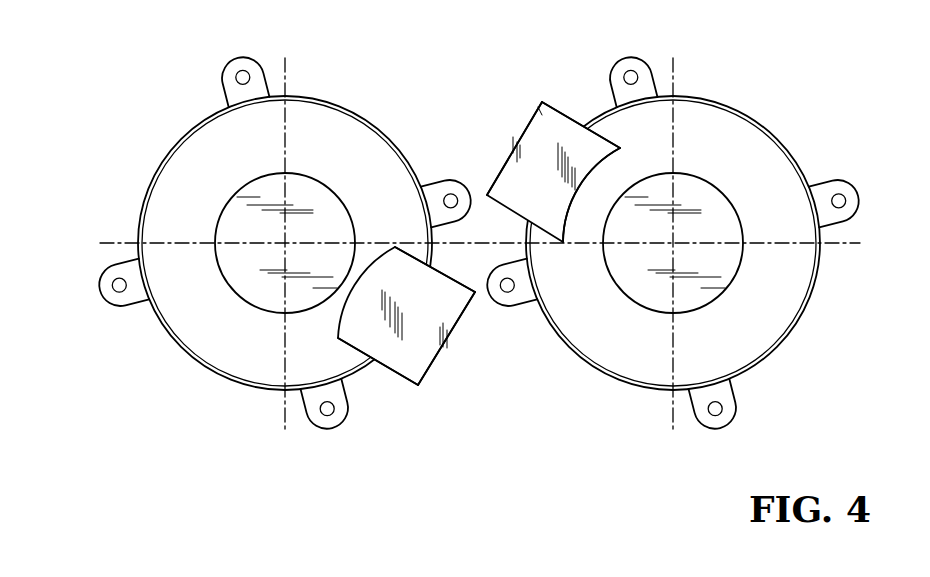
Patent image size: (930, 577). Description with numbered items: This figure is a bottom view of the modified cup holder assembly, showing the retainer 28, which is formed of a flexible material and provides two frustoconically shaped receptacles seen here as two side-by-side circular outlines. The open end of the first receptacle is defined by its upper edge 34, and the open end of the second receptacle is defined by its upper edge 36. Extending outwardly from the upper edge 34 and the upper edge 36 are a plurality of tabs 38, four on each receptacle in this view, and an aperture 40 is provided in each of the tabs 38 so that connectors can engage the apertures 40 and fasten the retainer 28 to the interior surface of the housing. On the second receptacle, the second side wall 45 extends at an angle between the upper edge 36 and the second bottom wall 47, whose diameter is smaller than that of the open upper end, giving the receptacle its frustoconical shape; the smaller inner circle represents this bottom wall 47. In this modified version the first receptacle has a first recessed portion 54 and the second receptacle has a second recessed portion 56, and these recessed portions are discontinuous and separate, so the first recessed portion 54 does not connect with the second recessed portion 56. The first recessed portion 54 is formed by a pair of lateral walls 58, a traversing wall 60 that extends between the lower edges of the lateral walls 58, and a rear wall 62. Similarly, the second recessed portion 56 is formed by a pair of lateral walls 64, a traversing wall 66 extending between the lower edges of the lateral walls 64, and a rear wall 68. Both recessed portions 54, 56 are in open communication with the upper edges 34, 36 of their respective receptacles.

The retainer 28 is at (440, 118).
The upper edge 34 is at (167, 153).
The upper edge 36 is at (770, 128).
The tabs 38 is at (228, 97).
The aperture 40 is at (247, 66).
The second side wall 45 is at (787, 300).
The second bottom wall 47 is at (737, 278).
The first recessed portion 54 is at (446, 434).
The second recessed portion 56 is at (572, 91).
The lateral walls 58 is at (440, 268).
The traversing wall 60 is at (449, 318).
The rear wall 62 is at (440, 362).
The lateral walls 64 is at (603, 140).
The traversing wall 66 is at (540, 103).
The rear wall 68 is at (515, 128).